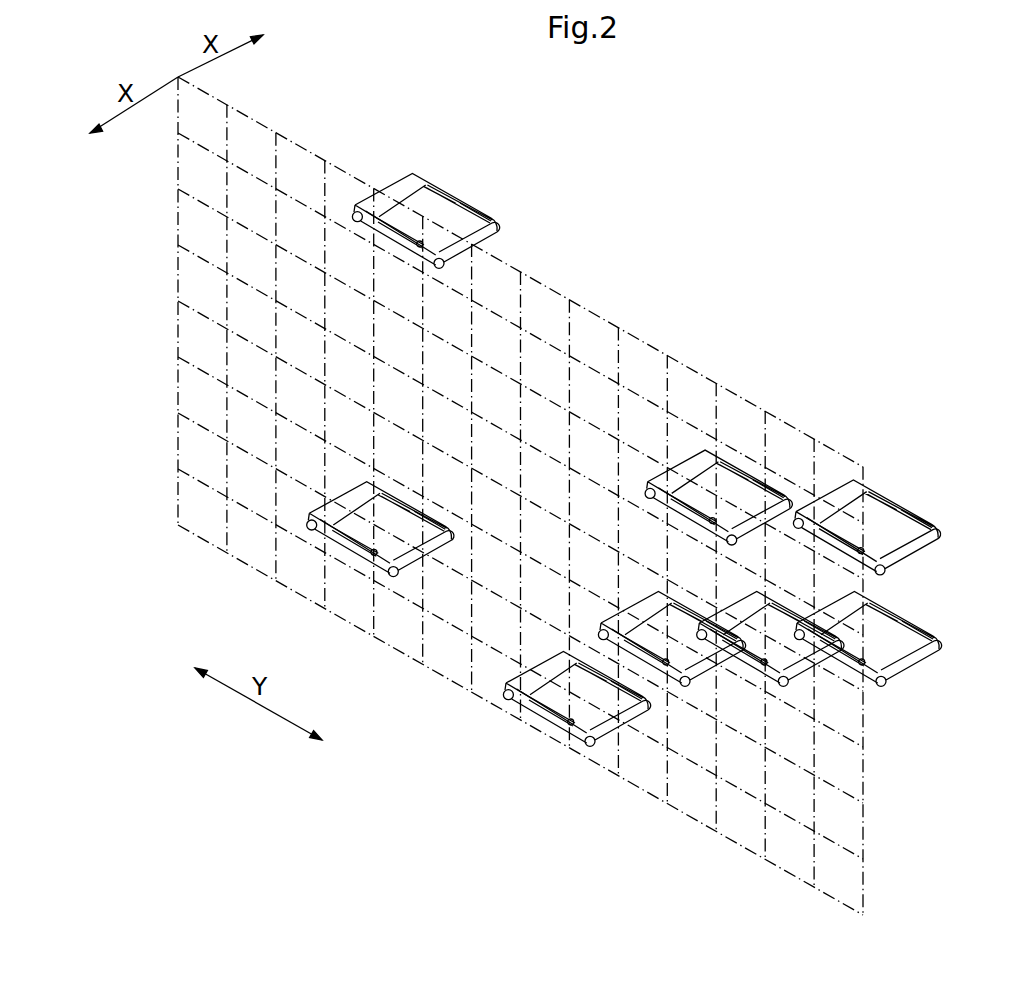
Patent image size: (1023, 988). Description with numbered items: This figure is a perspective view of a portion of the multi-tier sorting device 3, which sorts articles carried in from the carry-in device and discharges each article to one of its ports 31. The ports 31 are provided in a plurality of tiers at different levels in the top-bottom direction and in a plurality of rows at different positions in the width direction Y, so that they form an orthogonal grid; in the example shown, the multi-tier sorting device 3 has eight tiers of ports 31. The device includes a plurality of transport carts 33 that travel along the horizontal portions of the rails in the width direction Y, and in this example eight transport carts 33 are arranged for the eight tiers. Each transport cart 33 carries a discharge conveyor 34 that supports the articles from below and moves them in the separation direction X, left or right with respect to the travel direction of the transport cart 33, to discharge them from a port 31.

The multi-tier sorting device 3 is at (688, 208).
The port 31 is at (250, 302).
The transport cart 33 is at (428, 173).
The discharge conveyor 34 is at (453, 208).